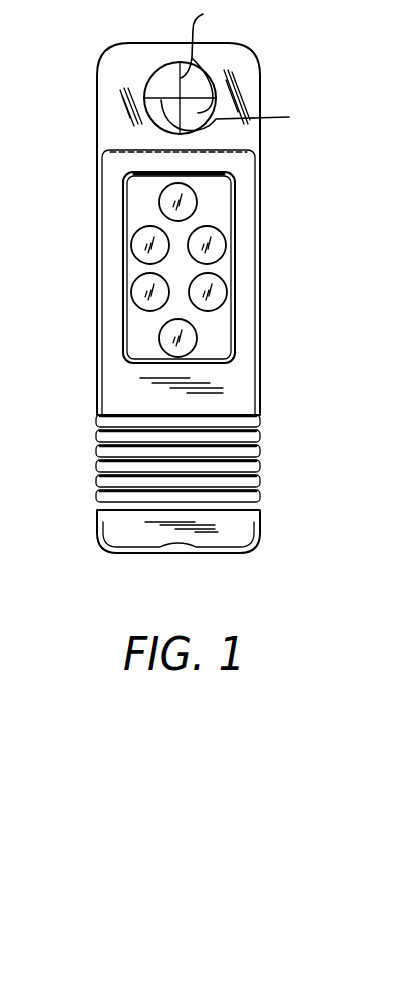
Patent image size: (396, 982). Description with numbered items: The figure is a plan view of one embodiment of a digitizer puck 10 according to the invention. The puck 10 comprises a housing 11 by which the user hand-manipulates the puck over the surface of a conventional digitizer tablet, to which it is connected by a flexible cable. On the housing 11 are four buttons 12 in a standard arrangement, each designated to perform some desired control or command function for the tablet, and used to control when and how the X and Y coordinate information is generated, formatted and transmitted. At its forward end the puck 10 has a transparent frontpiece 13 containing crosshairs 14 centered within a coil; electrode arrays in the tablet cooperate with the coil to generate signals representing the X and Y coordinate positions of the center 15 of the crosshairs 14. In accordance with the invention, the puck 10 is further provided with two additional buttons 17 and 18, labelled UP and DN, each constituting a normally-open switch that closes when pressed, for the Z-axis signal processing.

The digitizer puck 10 is at (279, 229).
The housing 11 is at (261, 406).
The buttons 12 is at (130, 286).
The transparent frontpiece 13 is at (259, 71).
The crosshairs 14 is at (215, 56).
The center of the crosshairs 15 is at (245, 120).
The UP button 17 is at (158, 196).
The DN button 18 is at (158, 337).